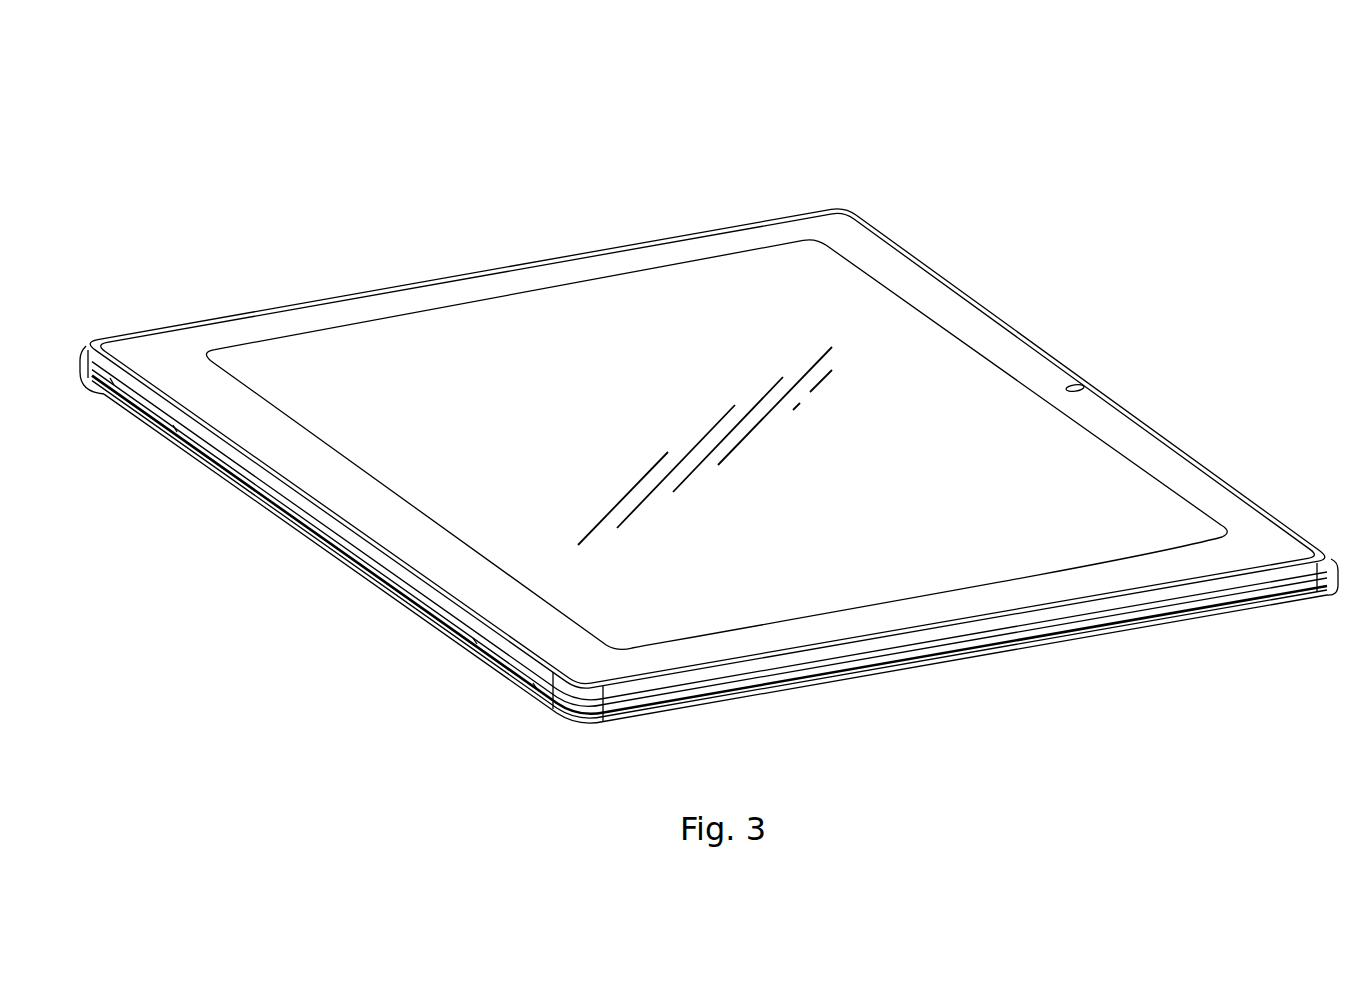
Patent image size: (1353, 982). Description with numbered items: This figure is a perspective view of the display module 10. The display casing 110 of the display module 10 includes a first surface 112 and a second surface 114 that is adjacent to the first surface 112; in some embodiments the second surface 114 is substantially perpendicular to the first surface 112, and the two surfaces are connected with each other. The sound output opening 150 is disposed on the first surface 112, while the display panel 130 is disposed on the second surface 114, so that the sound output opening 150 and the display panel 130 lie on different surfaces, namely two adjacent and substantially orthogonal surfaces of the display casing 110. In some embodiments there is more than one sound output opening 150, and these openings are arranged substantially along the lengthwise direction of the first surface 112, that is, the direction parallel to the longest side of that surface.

The display module 10 is at (120, 84).
The display casing 110 is at (1027, 335).
The first surface 112 is at (310, 522).
The second surface 114 is at (182, 345).
The display panel 130 is at (383, 340).
The sound output opening 150 is at (158, 421).